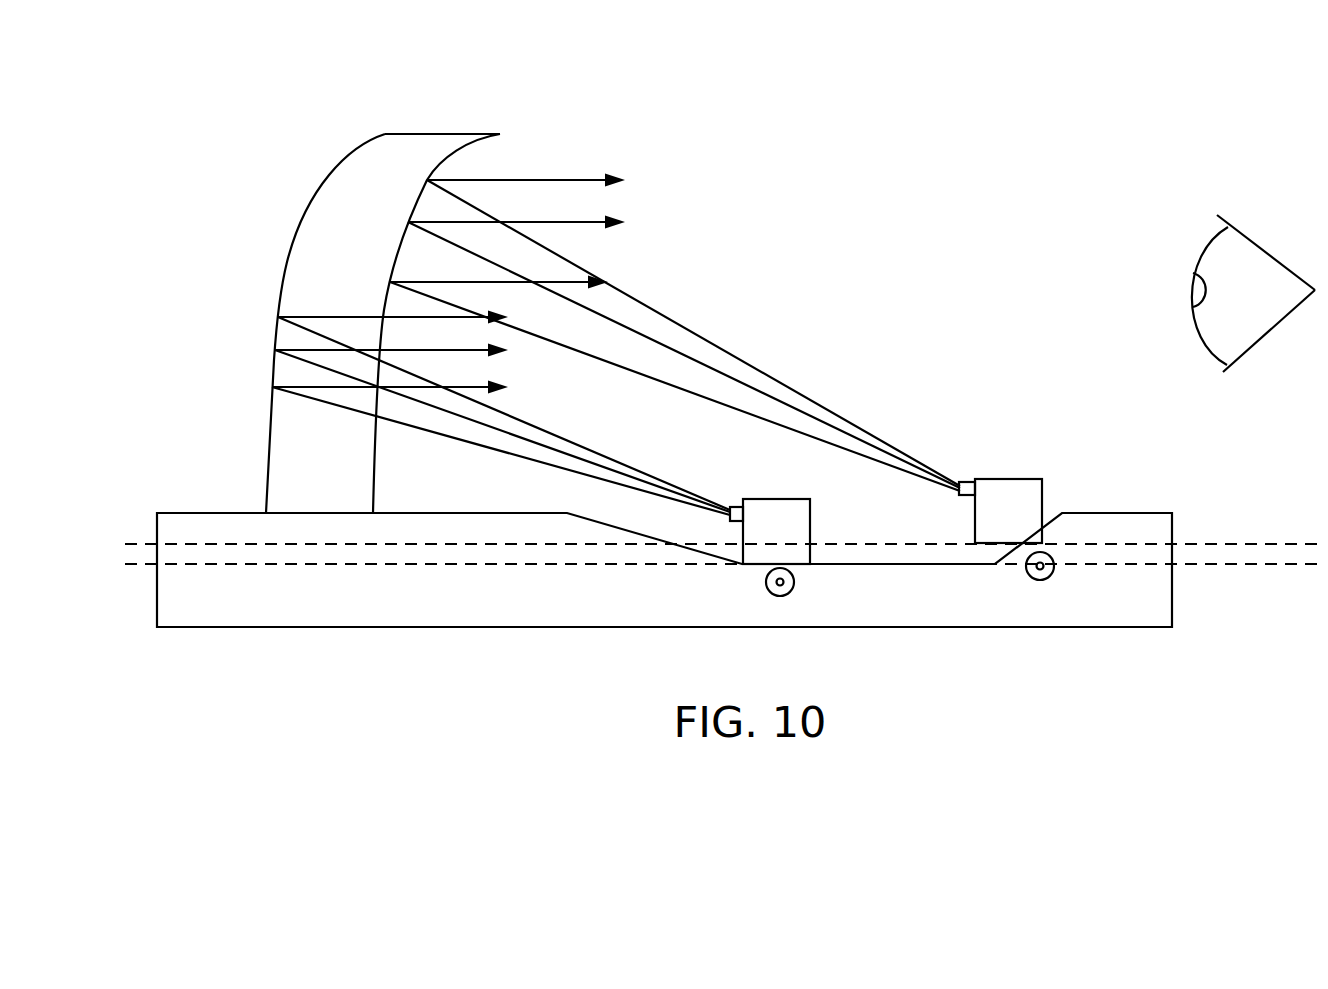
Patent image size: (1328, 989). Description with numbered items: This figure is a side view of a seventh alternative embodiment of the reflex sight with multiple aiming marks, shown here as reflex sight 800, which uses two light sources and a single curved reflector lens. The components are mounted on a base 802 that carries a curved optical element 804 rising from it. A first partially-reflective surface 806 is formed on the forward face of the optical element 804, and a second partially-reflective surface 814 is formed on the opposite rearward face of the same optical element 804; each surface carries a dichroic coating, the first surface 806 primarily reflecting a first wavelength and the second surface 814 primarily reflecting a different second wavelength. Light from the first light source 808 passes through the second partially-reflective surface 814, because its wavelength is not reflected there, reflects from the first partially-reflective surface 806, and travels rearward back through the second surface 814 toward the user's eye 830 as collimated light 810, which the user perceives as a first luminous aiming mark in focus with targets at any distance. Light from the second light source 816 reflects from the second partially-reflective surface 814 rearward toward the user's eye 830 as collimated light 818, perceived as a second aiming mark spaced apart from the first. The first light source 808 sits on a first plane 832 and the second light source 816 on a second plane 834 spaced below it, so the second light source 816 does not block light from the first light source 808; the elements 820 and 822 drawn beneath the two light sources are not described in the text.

The display system 800 is at (1000, 119).
The frame / base 802 is at (541, 627).
The optical element 804 is at (462, 133).
The first partially-reflective surface 806 is at (280, 291).
The first light source 808 is at (790, 499).
The collimated light 810 is at (455, 319).
The second partially-reflective surface 814 is at (396, 262).
The second light source 816 is at (1023, 479).
The collimated light 818 is at (578, 178).
The first pivot / hinge 820 is at (794, 582).
The second pivot / hinge 822 is at (1054, 570).
The user's eye 830 is at (1248, 237).
The first plane 832 is at (1278, 543).
The second plane 834 is at (1280, 567).